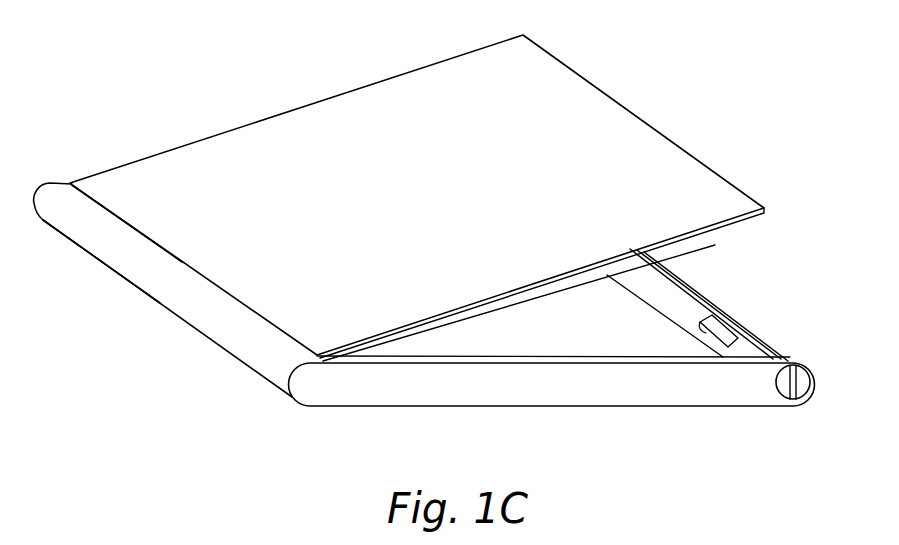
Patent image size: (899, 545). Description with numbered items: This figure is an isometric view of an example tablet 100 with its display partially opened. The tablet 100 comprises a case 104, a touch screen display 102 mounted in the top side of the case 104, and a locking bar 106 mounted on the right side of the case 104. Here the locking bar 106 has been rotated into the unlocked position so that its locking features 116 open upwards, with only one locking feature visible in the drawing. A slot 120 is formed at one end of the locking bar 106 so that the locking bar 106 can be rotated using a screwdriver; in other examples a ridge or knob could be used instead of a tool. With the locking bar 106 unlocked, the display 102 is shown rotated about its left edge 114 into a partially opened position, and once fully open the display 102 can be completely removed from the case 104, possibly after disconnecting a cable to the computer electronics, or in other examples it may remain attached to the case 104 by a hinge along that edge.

The tablet 100 is at (237, 105).
The touch screen display 102 is at (365, 87).
The case 104 is at (290, 372).
The locking bar 106 is at (682, 308).
The left edge 114 is at (182, 265).
The locking features 116 is at (745, 338).
The slot 120 is at (808, 368).